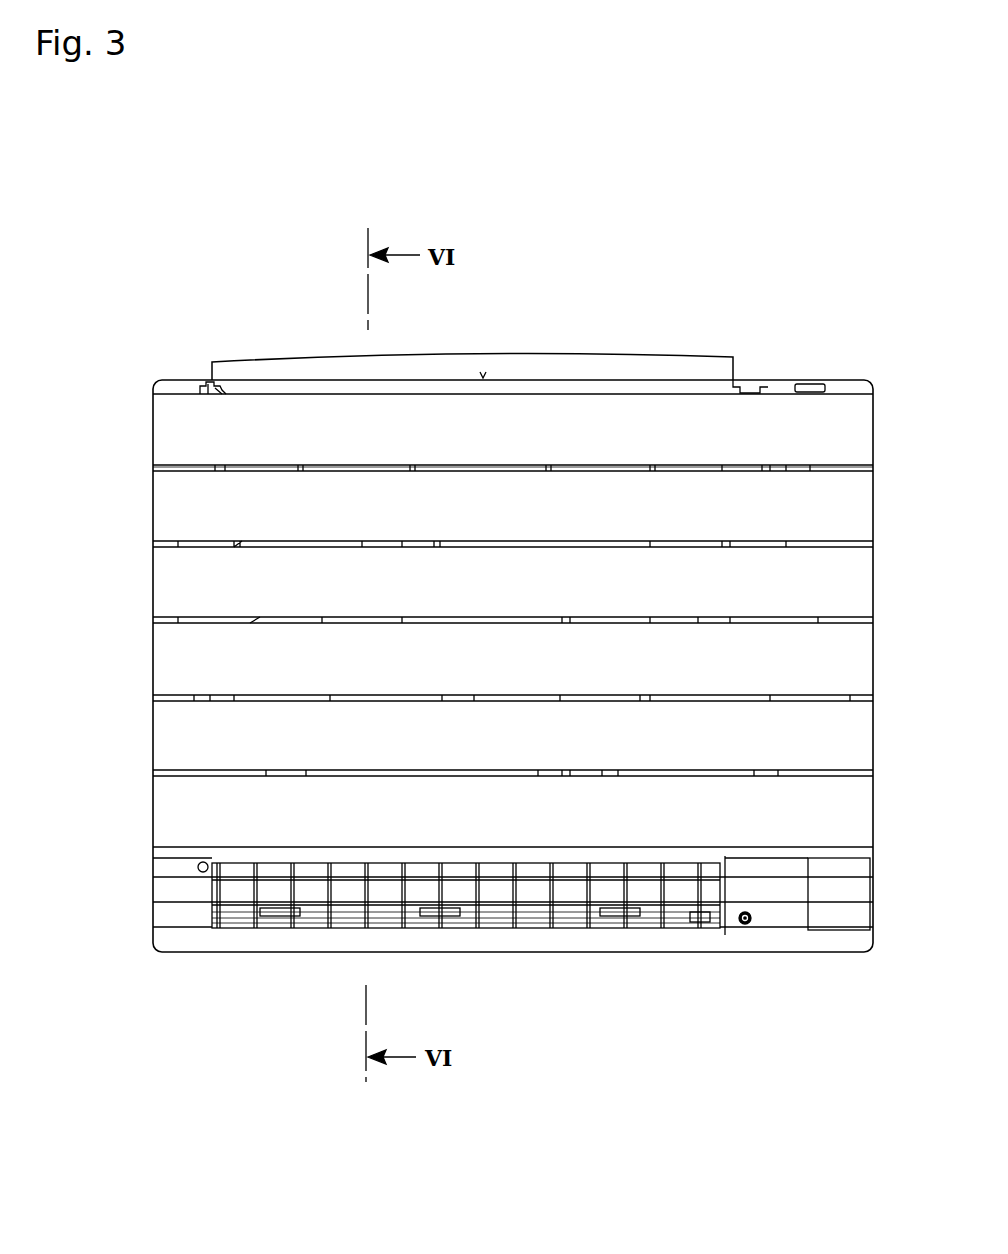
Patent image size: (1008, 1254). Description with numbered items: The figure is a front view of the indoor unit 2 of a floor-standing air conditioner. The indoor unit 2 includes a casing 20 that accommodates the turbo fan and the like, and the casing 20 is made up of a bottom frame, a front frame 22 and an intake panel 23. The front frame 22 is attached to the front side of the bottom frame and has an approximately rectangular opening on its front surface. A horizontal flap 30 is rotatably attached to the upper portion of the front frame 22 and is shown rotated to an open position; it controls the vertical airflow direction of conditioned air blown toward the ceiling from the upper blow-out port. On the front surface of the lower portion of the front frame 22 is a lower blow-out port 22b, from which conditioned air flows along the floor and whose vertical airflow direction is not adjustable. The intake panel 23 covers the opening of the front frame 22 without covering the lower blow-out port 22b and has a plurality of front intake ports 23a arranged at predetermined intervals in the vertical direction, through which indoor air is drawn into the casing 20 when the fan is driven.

The indoor unit 2 is at (835, 318).
The casing 20 is at (777, 382).
The front frame 22 is at (182, 385).
The lower blow-out port 22b is at (292, 920).
The intake panel 23 is at (193, 588).
The front intake ports 23a is at (325, 467).
The horizontal flap 30 is at (487, 360).